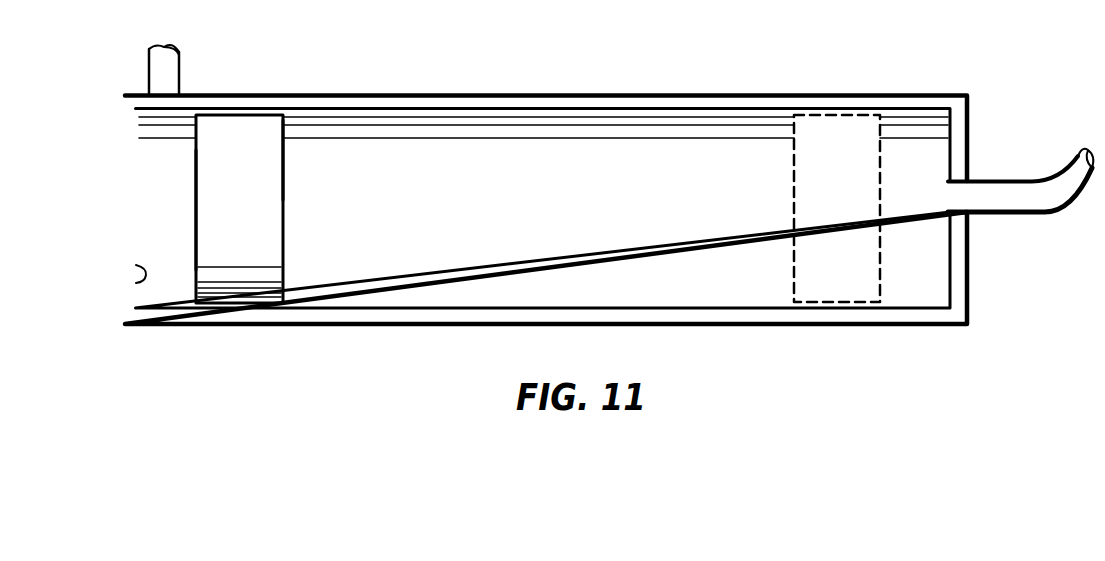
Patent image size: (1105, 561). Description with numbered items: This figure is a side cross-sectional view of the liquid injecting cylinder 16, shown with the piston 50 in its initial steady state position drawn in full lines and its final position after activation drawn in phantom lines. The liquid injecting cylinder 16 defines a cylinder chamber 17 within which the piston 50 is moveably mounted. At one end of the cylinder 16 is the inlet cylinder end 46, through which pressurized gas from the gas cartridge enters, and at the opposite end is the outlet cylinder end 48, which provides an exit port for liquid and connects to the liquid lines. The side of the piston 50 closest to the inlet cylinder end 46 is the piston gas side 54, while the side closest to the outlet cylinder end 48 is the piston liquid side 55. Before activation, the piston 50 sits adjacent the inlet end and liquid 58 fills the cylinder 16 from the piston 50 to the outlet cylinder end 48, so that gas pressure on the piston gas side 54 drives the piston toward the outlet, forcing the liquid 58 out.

The liquid injecting cylinder 16 is at (391, 326).
The chamber 17 is at (627, 211).
The inlet cylinder end 46 is at (123, 117).
The outlet cylinder end 48 is at (1022, 181).
The piston 50 is at (250, 201).
The piston gas side 54 is at (196, 208).
The piston liquid side 55 is at (283, 147).
The liquid 58 is at (135, 265).